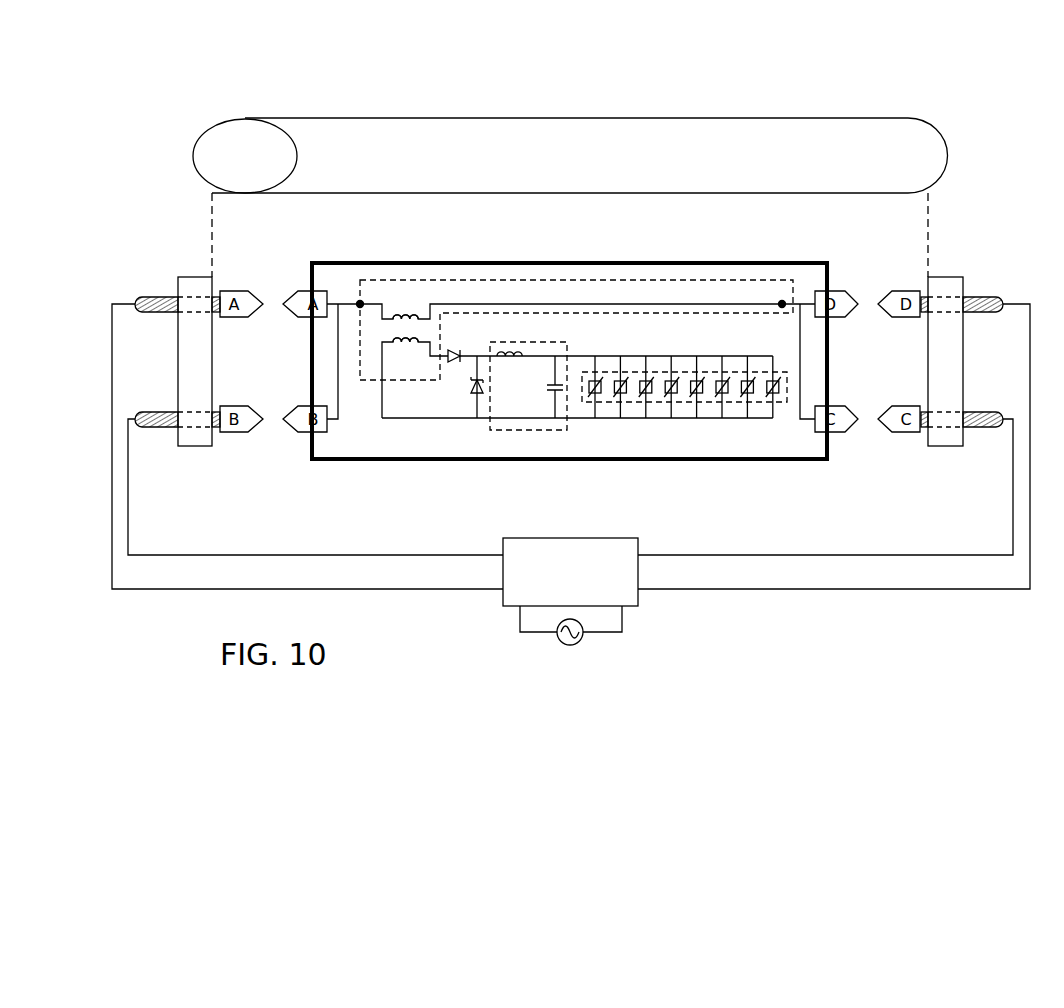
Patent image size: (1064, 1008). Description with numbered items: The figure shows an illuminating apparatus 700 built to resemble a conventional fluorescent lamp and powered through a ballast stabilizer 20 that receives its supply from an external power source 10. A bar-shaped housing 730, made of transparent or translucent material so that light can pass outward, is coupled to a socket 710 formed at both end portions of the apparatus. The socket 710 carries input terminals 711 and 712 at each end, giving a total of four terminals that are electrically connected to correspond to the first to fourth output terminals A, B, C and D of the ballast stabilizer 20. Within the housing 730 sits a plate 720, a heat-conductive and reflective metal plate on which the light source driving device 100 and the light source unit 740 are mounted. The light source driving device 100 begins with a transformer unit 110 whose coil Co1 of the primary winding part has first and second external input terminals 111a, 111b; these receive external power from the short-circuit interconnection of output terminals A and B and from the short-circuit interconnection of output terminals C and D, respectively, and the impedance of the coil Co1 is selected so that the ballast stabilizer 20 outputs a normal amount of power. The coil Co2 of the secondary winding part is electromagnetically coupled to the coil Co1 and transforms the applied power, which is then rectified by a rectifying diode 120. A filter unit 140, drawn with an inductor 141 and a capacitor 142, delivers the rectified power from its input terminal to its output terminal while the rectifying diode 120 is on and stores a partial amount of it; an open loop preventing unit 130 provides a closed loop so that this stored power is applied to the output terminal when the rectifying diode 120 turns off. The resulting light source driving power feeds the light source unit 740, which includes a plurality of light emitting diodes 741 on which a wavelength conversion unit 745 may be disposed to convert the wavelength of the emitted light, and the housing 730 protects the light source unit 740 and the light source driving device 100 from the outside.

The illuminating apparatus 700 is at (757, 79).
The housing 730 is at (928, 158).
The socket 710 is at (193, 277).
The input terminal 711 is at (152, 297).
The input terminal 712 is at (160, 412).
The plate 720 is at (510, 261).
The transformer unit 110 is at (630, 278).
The first external input terminal 111a is at (360, 297).
The second external input terminal 111b is at (782, 297).
The coil of the primary winding part Co1 is at (405, 316).
The coil of the secondary winding part Co2 is at (405, 347).
The light source driving device 100 is at (577, 407).
The rectifying diode 120 is at (455, 349).
The open loop preventing unit 130 is at (470, 388).
The filter unit 140 is at (568, 343).
The inductor of the filter unit 141 is at (510, 362).
The capacitor of the filter unit 142 is at (548, 390).
The light source unit 740 is at (697, 435).
The wavelength conversion unit 745 is at (717, 394).
The light emitting diode 741 is at (776, 394).
The ballast stabilizer 20 is at (570, 537).
The external power source 10 is at (582, 640).